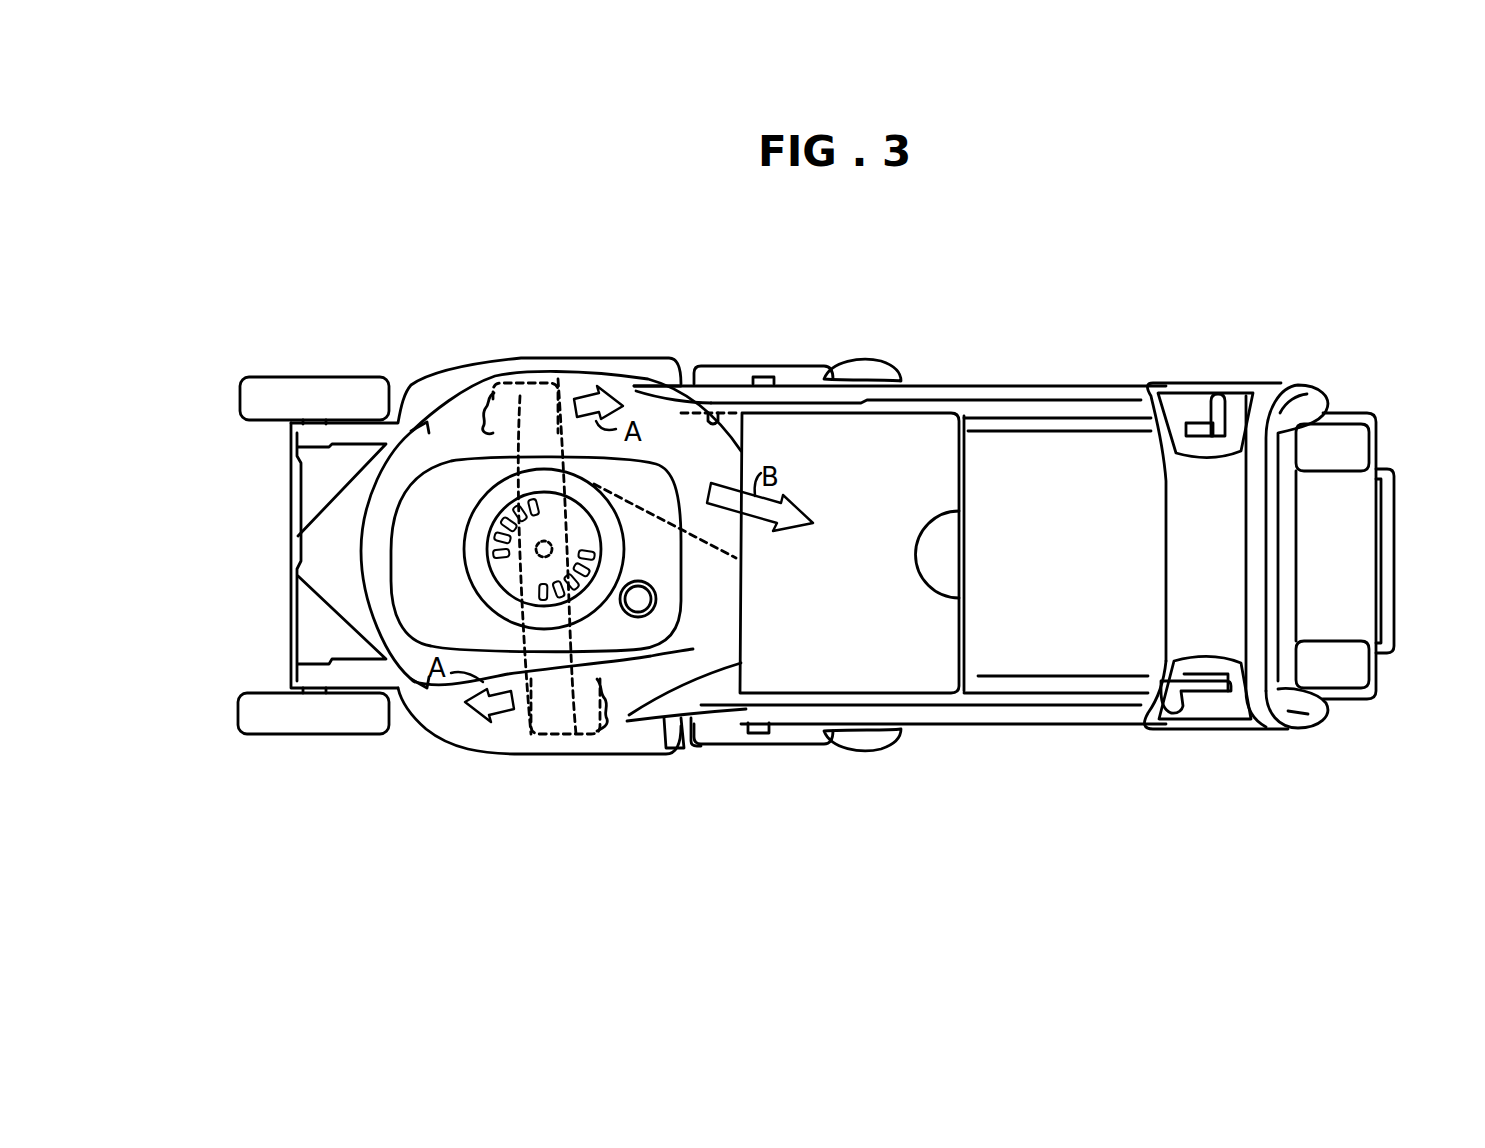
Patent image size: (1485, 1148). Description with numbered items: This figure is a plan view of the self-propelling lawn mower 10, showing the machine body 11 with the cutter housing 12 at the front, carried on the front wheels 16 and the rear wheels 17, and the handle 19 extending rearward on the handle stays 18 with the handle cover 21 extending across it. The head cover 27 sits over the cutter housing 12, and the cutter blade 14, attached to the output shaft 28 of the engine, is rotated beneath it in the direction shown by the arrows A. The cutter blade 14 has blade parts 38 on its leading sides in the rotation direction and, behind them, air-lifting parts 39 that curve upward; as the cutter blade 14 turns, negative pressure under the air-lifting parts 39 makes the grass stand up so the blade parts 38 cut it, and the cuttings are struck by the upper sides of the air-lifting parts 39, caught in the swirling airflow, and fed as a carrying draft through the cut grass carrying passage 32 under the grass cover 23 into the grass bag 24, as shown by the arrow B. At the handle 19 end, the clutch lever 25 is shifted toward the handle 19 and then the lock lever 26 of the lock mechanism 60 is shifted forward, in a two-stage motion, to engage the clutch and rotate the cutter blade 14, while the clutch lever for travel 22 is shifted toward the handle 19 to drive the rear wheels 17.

The lawn mower 10 is at (252, 190).
The machine body 11 is at (238, 545).
The cutter housing 12 is at (617, 760).
The cutter blade 14 is at (527, 358).
The front wheels 16 is at (305, 373).
The rear wheels 17 is at (805, 362).
The handle stays 18 is at (672, 357).
The handle 19 is at (990, 377).
The handle cover 21 is at (1190, 756).
The clutch lever for travel 22 is at (1375, 420).
The grass cover 23 is at (910, 402).
The grass bag 24 is at (1030, 420).
The clutch lever 25 is at (1338, 382).
The lock lever 26 is at (1214, 395).
The head cover 27 is at (445, 458).
The output shaft 28 is at (540, 556).
The cut grass carrying passage 32 is at (712, 408).
The blade parts 38 is at (556, 378).
The air-lifting parts 39 is at (493, 380).
The lock mechanism 60 is at (1237, 372).